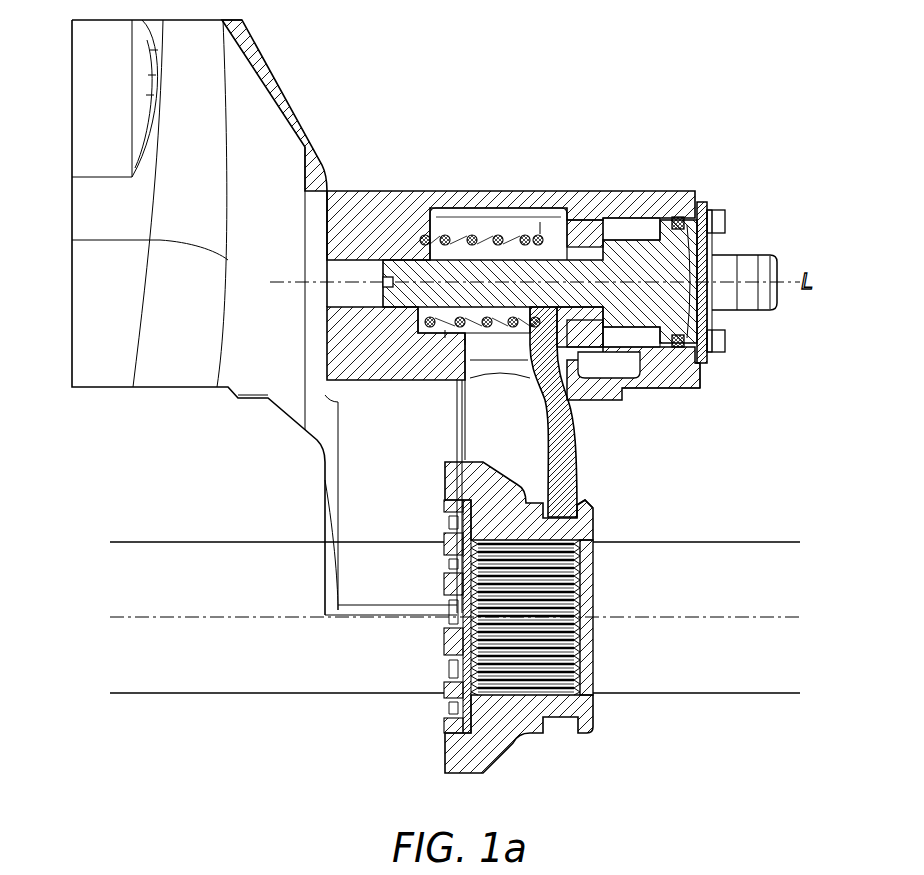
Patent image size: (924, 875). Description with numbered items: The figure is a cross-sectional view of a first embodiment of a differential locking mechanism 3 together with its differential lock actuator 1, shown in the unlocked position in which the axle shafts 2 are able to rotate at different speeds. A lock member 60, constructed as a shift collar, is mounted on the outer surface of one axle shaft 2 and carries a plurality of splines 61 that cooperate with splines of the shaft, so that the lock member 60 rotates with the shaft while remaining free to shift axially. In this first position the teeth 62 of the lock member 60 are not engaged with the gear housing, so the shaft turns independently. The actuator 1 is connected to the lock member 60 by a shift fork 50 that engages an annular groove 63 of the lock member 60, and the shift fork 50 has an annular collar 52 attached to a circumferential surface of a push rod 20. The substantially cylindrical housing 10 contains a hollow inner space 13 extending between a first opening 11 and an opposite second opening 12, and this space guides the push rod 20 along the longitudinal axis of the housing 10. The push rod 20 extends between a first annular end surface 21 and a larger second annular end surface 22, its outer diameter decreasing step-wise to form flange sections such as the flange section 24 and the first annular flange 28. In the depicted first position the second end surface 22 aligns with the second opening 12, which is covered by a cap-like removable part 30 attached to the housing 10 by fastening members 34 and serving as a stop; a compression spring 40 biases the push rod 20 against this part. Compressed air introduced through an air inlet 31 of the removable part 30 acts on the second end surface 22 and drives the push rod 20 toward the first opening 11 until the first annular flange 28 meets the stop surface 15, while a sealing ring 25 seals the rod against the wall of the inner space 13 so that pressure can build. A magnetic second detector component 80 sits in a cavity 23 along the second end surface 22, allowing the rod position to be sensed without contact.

The differential lock actuator 1 is at (507, 167).
The axle shaft 2 is at (766, 540).
The differential locking mechanism 3 is at (622, 117).
The housing 10 is at (413, 191).
The first opening 11 is at (328, 273).
The second opening 12 is at (700, 310).
The hollow inner space 13 is at (628, 226).
The stop surface 15 is at (417, 318).
The push rod 20 is at (562, 262).
The first annular end surface 21 is at (385, 292).
The second annular end surface 22 is at (700, 202).
The cavity 23 is at (708, 364).
The flange section 24 is at (585, 232).
The sealing ring 25 is at (678, 366).
The first annular flange 28 is at (450, 332).
The removable part 30 is at (788, 306).
The air inlet 31 is at (766, 256).
The fastening member 34 is at (726, 220).
The compression spring 40 is at (464, 235).
The shift fork 50 is at (547, 440).
The annular collar 52 is at (536, 235).
The lock member 60 is at (514, 632).
The splines 61 is at (566, 640).
The teeth 62 is at (445, 641).
The annular groove 63 is at (588, 509).
The second detector component 80 is at (677, 216).